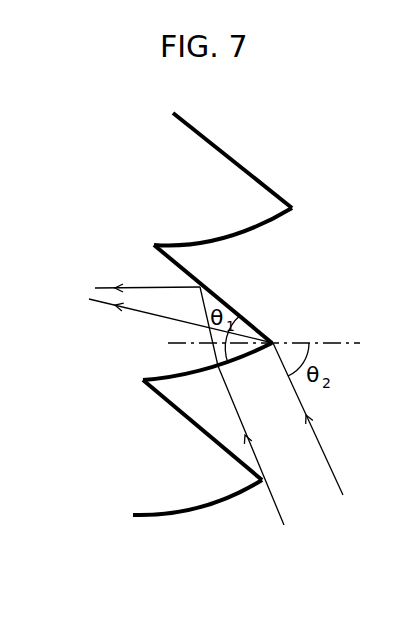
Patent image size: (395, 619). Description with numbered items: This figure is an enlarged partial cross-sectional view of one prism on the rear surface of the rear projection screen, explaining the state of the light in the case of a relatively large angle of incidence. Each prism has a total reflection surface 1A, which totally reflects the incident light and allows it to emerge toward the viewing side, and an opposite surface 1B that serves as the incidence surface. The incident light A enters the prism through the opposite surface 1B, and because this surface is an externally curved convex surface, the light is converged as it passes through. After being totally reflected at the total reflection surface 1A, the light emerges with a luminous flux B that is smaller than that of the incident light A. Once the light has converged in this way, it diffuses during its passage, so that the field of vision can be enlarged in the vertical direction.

The total reflection surface 1A is at (250, 172).
The opposite surface 1B is at (248, 232).
The incident light A is at (335, 477).
The luminous flux of the totally reflected light B is at (152, 314).